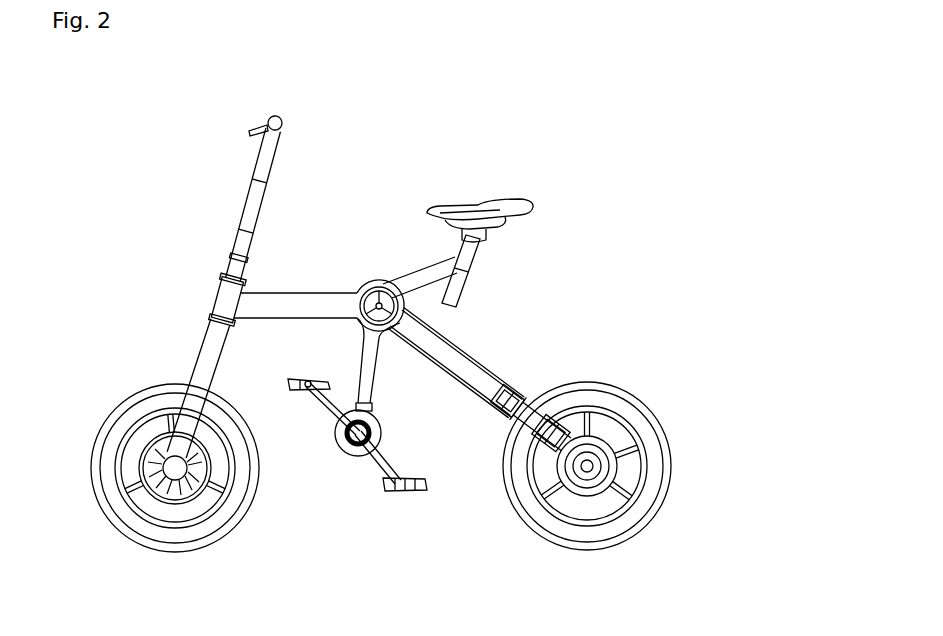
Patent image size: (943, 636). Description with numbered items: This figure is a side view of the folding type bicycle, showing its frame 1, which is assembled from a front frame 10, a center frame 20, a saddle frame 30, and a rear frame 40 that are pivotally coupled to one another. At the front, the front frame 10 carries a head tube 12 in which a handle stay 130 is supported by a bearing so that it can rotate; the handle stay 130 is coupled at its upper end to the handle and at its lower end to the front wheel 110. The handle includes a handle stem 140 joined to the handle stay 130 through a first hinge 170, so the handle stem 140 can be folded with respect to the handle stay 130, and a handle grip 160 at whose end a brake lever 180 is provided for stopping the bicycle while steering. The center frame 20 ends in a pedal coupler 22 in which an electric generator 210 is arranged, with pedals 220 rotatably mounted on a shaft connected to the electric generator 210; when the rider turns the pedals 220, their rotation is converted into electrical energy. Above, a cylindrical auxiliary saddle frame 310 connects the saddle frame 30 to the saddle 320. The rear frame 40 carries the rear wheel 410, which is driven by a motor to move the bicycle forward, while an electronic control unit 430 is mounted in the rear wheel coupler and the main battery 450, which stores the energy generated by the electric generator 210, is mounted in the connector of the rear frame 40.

The frame 1 is at (446, 152).
The front frame 10 is at (310, 295).
The head tube 12 is at (222, 300).
The center frame 20 is at (341, 318).
The pedal coupler 22 is at (372, 405).
The saddle frame 30 is at (422, 312).
The rear frame 40 is at (437, 355).
The front wheel 110 is at (168, 540).
The handle stay 130 is at (205, 355).
The handle stem 140 is at (263, 177).
The handle grip 160 is at (268, 117).
The first hinge 170 is at (255, 262).
The brake lever 180 is at (250, 131).
The electric generator 210 is at (345, 442).
The pedals 220 is at (396, 494).
The auxiliary saddle frame 310 is at (470, 253).
The saddle 320 is at (511, 208).
The rear wheel 410 is at (579, 542).
The electronic control unit (ECU) 430 is at (547, 430).
The main battery 450 is at (484, 396).